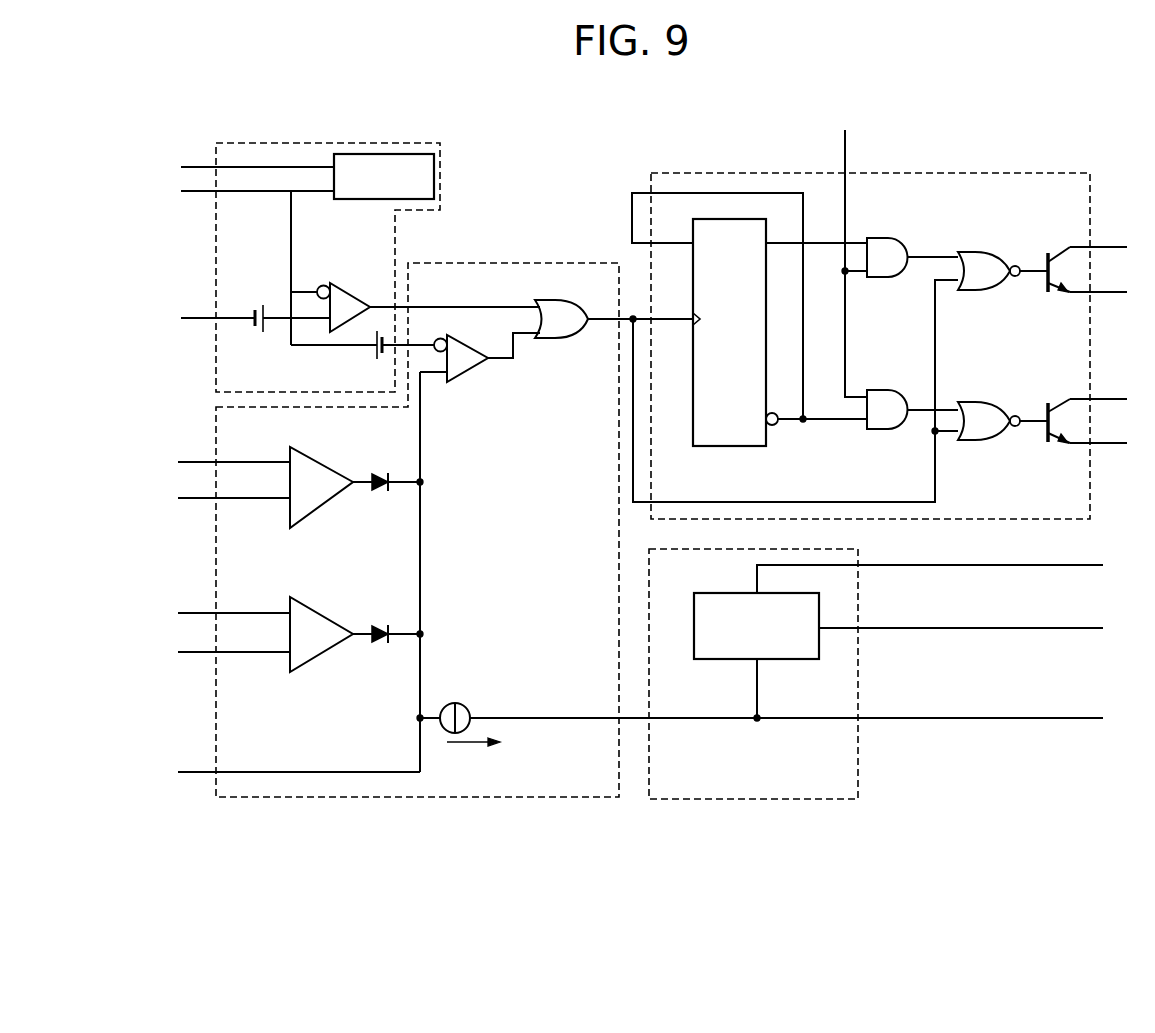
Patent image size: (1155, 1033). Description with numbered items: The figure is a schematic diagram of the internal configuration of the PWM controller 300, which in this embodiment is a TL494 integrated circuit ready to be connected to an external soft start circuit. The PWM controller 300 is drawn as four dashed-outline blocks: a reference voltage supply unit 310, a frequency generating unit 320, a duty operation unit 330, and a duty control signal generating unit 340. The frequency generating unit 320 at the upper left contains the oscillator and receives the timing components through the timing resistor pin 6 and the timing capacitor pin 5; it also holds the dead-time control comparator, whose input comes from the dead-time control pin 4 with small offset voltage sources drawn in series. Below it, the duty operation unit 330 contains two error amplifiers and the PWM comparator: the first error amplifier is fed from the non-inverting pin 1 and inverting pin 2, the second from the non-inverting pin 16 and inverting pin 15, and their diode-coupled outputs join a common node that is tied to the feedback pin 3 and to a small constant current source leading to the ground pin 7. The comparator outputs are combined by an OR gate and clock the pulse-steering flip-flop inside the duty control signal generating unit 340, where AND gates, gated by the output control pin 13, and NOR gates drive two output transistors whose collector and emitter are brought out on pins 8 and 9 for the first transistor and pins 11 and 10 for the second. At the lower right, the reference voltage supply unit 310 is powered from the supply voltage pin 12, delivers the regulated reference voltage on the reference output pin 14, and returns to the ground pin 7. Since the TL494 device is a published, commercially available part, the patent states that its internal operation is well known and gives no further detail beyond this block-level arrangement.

The PWM controller 300 is at (591, 117).
The reference voltage supply unit 310 is at (735, 799).
The frequency generating unit 320 is at (355, 143).
The duty operation unit 330 is at (305, 797).
The duty control signal generating unit 340 is at (1036, 173).
The 1IN+ terminal 1 is at (210, 454).
The 1IN- terminal 2 is at (210, 506).
The feedback terminal 3 is at (247, 778).
The dead-time control terminal 4 is at (233, 324).
The CT terminal 5 is at (237, 205).
The RT terminal 6 is at (237, 154).
The GND terminal 7 is at (810, 711).
The C1 collector terminal 8 is at (1111, 240).
The E1 emitter terminal 9 is at (1110, 300).
The E2 emitter terminal 10 is at (1110, 453).
The C2 collector terminal 11 is at (1111, 392).
The Vcc terminal 12 is at (948, 565).
The output control terminal 13 is at (842, 253).
The REF terminal 14 is at (980, 620).
The 2IN- terminal 15 is at (210, 661).
The 2IN+ terminal 16 is at (210, 605).